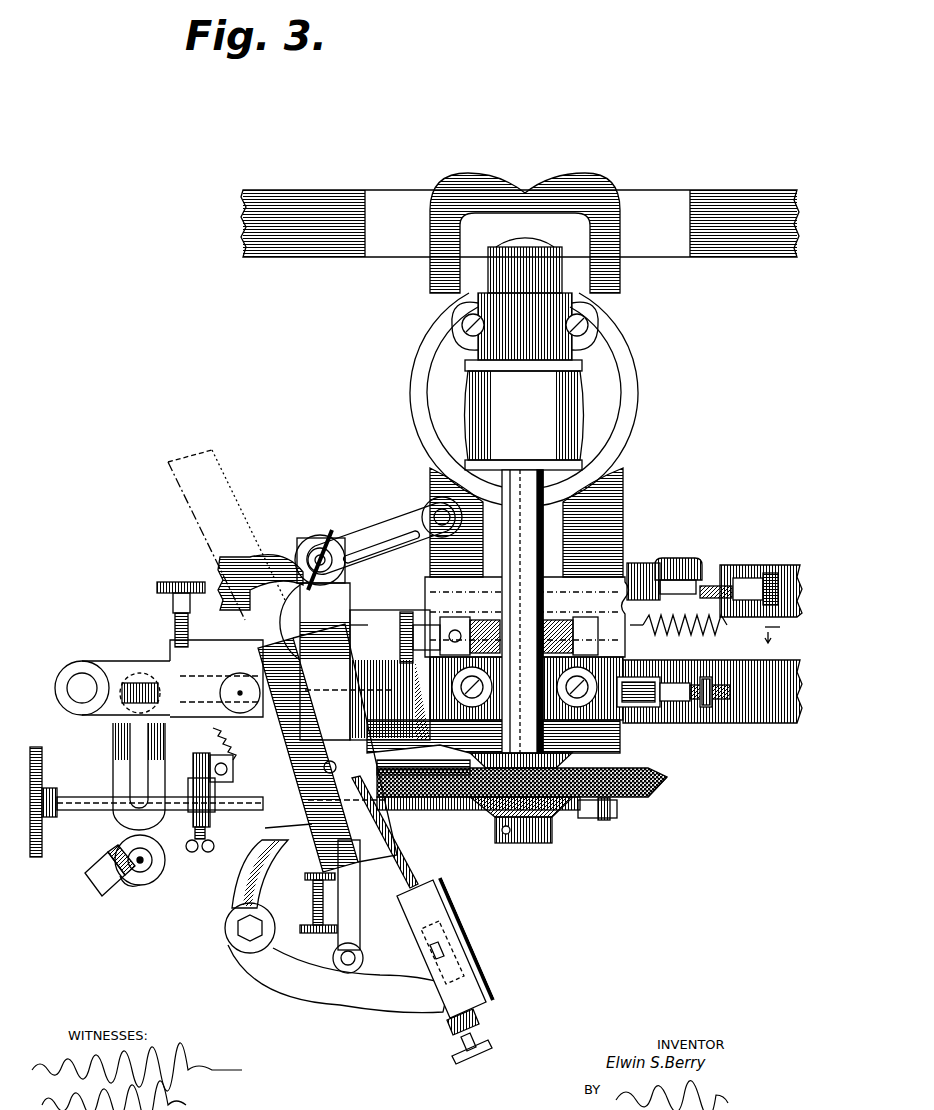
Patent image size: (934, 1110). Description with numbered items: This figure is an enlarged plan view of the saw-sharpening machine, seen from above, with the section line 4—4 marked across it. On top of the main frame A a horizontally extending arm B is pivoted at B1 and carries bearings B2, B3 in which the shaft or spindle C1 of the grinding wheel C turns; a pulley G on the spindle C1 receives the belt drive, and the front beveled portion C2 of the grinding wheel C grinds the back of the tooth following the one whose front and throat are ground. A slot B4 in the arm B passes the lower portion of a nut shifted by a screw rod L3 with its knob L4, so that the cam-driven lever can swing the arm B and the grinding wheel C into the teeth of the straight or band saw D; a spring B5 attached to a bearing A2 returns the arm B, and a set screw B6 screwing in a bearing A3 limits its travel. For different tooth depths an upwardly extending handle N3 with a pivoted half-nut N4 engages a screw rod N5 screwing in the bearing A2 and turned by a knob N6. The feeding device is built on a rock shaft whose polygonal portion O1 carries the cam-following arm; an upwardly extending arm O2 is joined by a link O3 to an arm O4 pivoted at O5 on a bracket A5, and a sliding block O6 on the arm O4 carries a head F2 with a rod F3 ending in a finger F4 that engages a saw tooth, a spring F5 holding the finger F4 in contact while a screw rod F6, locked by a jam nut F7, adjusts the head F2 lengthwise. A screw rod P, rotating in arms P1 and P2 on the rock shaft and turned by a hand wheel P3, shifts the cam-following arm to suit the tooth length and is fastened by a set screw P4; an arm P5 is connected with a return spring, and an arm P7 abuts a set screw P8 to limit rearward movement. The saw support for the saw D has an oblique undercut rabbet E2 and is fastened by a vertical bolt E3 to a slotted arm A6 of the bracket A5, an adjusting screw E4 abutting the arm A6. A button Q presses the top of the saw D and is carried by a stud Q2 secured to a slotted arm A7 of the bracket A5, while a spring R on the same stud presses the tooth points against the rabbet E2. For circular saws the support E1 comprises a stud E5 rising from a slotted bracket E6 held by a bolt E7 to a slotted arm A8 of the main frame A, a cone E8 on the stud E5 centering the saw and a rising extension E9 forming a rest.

The main frame A is at (736, 257).
The bearing A2 is at (755, 566).
The bearing A3 is at (665, 708).
The bracket A5 is at (246, 560).
The slotted arm A6 is at (86, 664).
The slotted arm A7 is at (390, 525).
The slotted arm A8 is at (141, 680).
The arm B is at (630, 426).
The pivot B1 is at (526, 248).
The bearing B2 is at (498, 313).
The bearing B3 is at (482, 672).
The slot B4 is at (560, 624).
The spring B5 is at (702, 634).
The set screw B6 is at (692, 723).
The grinding wheel C is at (636, 776).
The shaft or spindle C1 is at (541, 535).
The front beveled portion C2 is at (628, 794).
The straight or band saw D is at (238, 504).
The saw support E1 is at (128, 859).
The rabbet E2 is at (296, 740).
The vertical bolt E3 is at (216, 668).
The adjusting screw E4 is at (176, 631).
The stud E5 is at (139, 866).
The slotted bracket E6 is at (130, 754).
The bolt E7 is at (116, 729).
The cone E8 is at (155, 881).
The rising extension E9 is at (96, 885).
The head F2 is at (426, 916).
The rod F3 is at (400, 864).
The finger F4 is at (428, 950).
The spring F5 is at (463, 962).
The screw rod F6 is at (478, 1027).
The jam nut F7 is at (450, 1022).
The pulley G is at (480, 401).
The screw rod L3 is at (488, 622).
The knob or handle L4 is at (406, 618).
The handle N3 is at (683, 567).
The half-nut N4 is at (652, 563).
The screw rod N5 is at (712, 586).
The knob or handle N6 is at (778, 573).
The polygonal portion O1 is at (290, 613).
The arm O2 is at (400, 808).
The link O3 is at (366, 913).
The arm O4 is at (350, 996).
The pivot O5 is at (243, 936).
The sliding block O6 is at (449, 946).
The screw rod P is at (92, 797).
The arm P1 is at (592, 818).
The arm P2 is at (210, 806).
The hand wheel P3 is at (42, 853).
The set screw P4 is at (195, 849).
The arm P5 is at (192, 791).
The arm P7 is at (275, 833).
The set screw P8 is at (312, 906).
The button Q is at (323, 767).
The stud Q2 is at (320, 545).
The spring R is at (390, 676).
The section line 4 is at (565, 635).